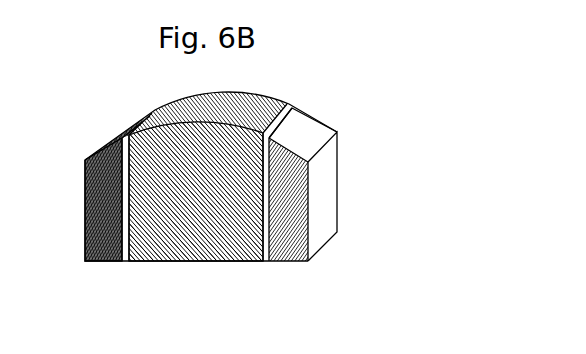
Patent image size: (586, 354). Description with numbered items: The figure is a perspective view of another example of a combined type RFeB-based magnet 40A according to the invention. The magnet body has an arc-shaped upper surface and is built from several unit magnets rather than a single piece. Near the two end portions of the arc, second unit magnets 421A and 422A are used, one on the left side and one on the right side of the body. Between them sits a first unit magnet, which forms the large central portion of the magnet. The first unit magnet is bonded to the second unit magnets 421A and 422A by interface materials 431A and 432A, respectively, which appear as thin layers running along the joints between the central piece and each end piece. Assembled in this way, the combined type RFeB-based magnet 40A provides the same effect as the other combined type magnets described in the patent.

The combined type RFeB-based magnet 40A is at (293, 177).
The second unit magnet 421A is at (100, 193).
The second unit magnet 422A is at (338, 188).
The interface material 431A is at (127, 262).
The interface material 432A is at (264, 262).